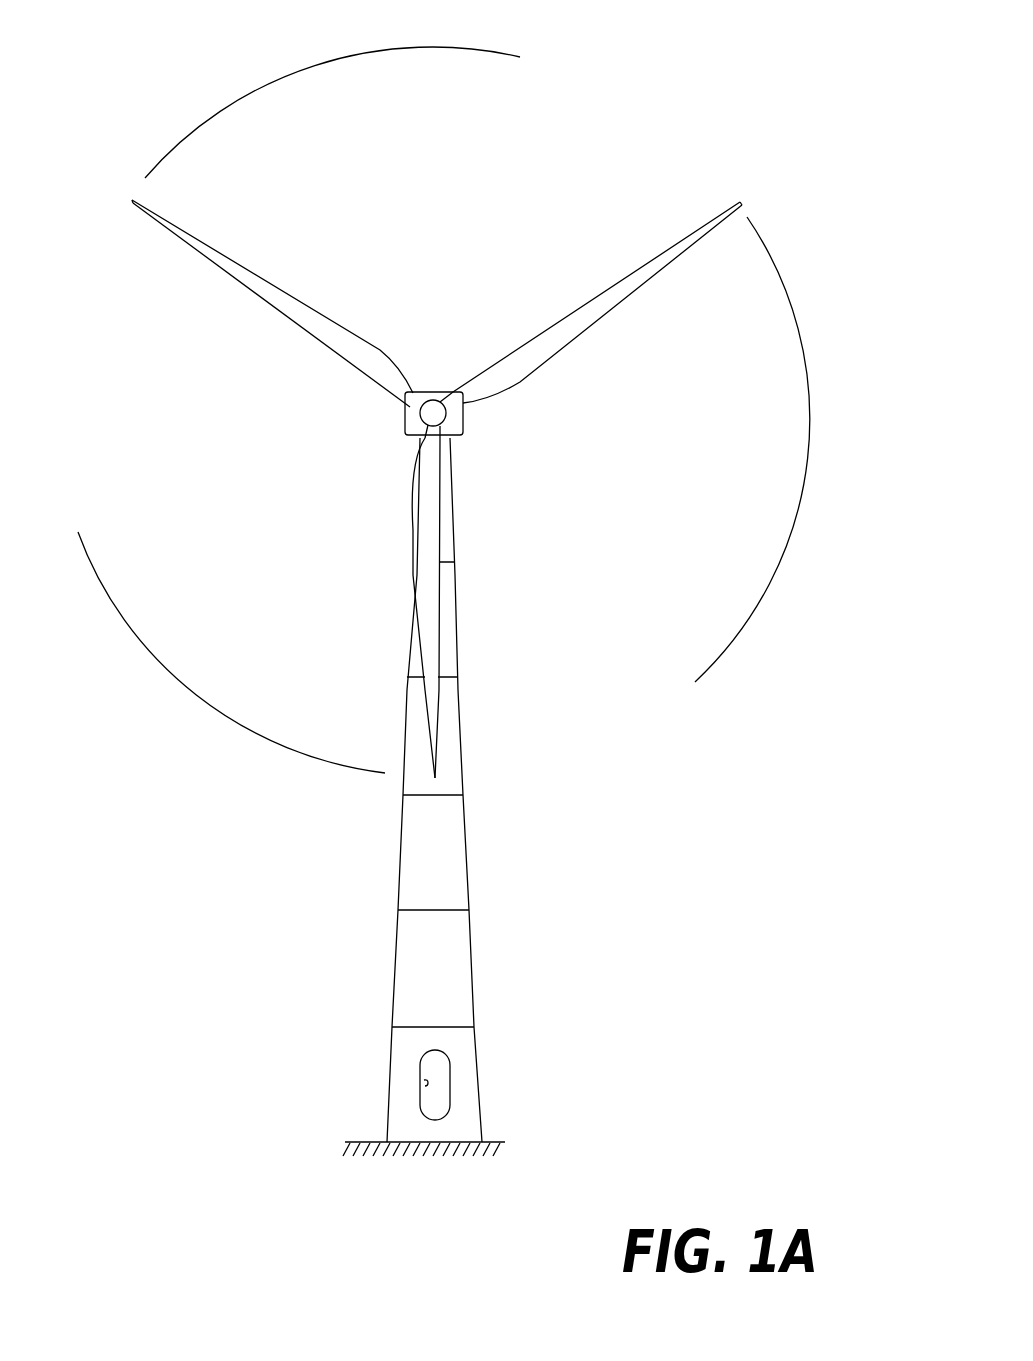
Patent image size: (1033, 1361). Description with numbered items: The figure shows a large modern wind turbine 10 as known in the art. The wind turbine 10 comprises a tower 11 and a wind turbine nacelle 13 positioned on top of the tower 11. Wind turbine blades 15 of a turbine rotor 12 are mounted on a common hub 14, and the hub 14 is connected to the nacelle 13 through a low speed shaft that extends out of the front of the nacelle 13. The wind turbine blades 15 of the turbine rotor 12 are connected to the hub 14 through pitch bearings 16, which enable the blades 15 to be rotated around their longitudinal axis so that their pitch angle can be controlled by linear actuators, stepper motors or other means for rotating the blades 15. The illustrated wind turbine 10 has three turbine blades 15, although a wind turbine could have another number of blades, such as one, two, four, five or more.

The wind turbine 10 is at (370, 984).
The tower 11 is at (458, 863).
The turbine rotor 12 is at (355, 429).
The wind turbine nacelle 13 is at (463, 437).
The hub 14 is at (434, 408).
The wind turbine blades 15 is at (437, 651).
The pitch bearings 16 is at (458, 397).